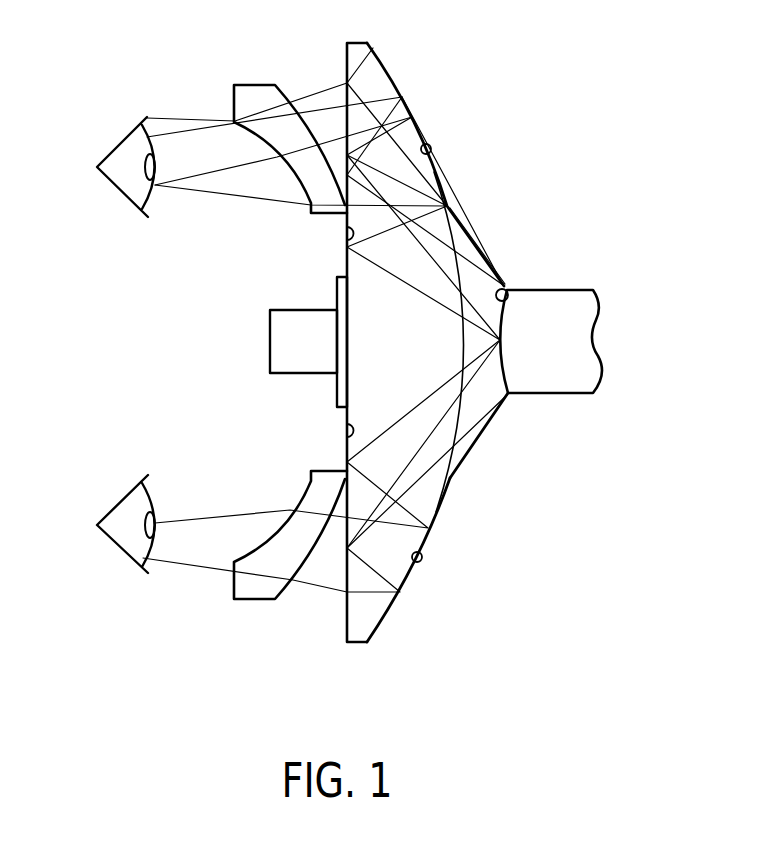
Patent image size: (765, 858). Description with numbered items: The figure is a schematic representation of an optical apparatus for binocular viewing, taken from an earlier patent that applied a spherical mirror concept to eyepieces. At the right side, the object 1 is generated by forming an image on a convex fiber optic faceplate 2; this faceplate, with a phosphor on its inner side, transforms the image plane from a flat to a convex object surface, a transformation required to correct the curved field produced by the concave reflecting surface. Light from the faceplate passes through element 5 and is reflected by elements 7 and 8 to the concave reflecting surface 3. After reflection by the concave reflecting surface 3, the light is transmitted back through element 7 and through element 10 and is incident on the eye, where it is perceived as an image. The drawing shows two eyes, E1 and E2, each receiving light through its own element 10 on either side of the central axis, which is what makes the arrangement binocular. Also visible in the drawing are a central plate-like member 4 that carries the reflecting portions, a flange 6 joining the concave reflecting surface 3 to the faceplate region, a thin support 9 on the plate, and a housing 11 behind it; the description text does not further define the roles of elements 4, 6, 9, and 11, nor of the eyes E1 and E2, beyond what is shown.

The object 1 is at (578, 290).
The convex fiber optic faceplate 2 is at (503, 282).
The concave reflecting surface 3 is at (432, 150).
The beam splitter plate 4 is at (358, 632).
The transmissive element 5 is at (462, 340).
The mirror flange 6 is at (482, 417).
The reflecting and transmitting element 7 is at (345, 73).
The reflector 8 is at (345, 230).
The support 9 is at (335, 293).
The transmissive element 10 is at (248, 92).
The housing 11 is at (283, 345).
The eye E1 is at (109, 167).
The eye E2 is at (109, 524).